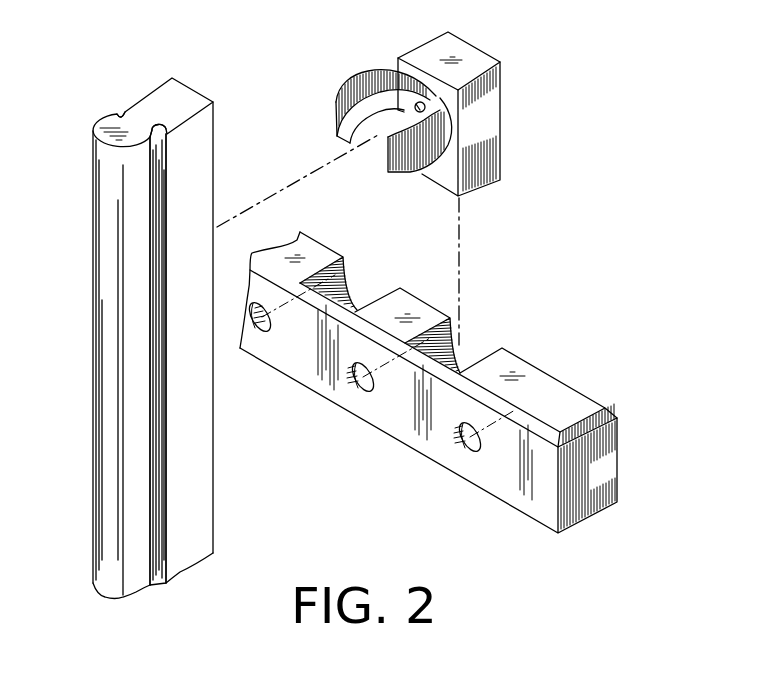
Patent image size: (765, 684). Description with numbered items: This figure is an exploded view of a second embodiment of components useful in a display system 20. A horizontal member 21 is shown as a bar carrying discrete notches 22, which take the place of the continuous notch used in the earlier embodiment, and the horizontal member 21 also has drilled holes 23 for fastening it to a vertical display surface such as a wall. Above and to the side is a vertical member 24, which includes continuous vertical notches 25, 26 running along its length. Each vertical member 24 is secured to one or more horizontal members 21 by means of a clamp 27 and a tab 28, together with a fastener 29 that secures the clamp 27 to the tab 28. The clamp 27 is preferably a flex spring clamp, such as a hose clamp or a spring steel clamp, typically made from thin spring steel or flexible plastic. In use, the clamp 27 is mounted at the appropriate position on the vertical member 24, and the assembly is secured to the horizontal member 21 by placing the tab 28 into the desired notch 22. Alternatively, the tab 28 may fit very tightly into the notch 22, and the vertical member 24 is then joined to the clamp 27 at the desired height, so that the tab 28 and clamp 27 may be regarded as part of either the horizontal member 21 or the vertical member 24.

The display system 20 is at (451, 416).
The horizontal member 21 is at (588, 520).
The notch 22 is at (462, 346).
The drilled hole 23 is at (360, 392).
The vertical member 24 is at (172, 105).
The continuous vertical notch 25 is at (121, 111).
The continuous vertical notch 26 is at (162, 145).
The clamp 27 is at (366, 80).
The tab 28 is at (500, 123).
The fastener 29 is at (419, 103).